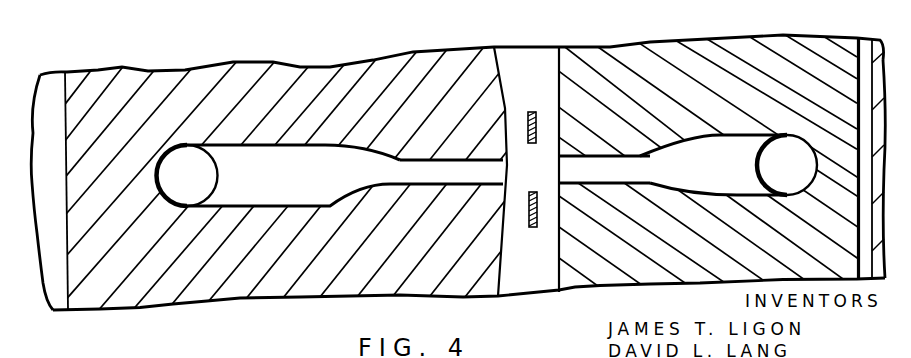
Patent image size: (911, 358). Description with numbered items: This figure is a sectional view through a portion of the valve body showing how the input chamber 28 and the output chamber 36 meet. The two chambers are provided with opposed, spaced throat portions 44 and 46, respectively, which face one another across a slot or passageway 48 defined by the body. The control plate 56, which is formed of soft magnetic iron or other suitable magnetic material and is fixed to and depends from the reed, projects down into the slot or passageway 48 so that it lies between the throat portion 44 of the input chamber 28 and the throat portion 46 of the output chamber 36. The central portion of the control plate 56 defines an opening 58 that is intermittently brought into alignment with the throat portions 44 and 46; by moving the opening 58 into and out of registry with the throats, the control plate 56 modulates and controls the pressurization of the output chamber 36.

The input chamber 28 is at (232, 148).
The output chamber 36 is at (737, 133).
The throat portion 44 is at (440, 159).
The throat portion 46 is at (615, 151).
The slot or passageway 48 is at (548, 261).
The control plate 56 is at (540, 112).
The opening 58 is at (532, 168).